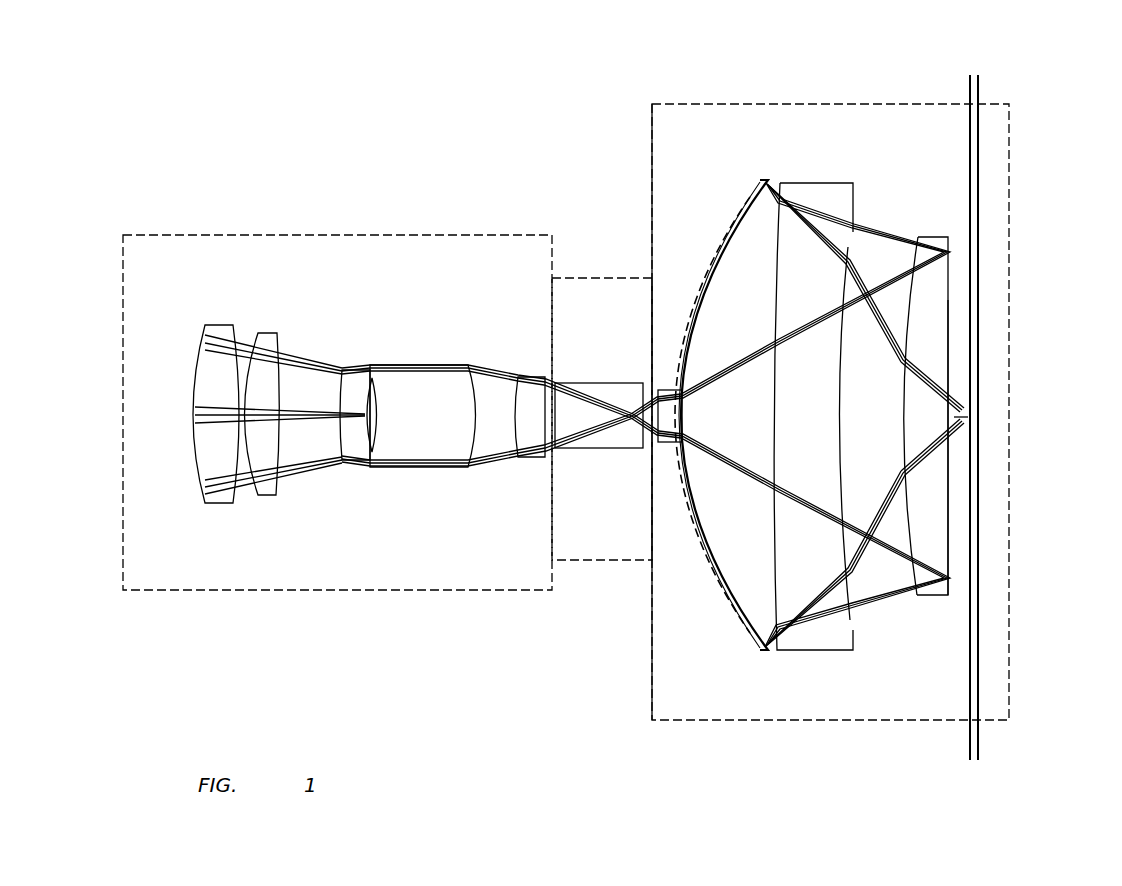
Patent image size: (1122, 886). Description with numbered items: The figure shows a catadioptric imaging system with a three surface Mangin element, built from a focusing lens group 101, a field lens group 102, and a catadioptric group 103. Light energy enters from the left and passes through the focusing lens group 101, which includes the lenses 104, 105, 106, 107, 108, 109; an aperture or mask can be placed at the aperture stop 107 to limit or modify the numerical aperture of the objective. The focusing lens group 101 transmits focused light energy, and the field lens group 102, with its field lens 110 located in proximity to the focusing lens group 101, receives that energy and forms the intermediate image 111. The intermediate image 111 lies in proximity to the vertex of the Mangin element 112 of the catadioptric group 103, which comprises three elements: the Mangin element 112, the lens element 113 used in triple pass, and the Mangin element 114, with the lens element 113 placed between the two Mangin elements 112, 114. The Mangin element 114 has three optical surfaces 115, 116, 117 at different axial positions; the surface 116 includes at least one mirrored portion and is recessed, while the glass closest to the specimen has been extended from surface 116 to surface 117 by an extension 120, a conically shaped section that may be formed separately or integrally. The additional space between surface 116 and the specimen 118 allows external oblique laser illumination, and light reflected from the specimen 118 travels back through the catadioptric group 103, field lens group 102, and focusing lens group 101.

The focusing lens group 101 is at (300, 235).
The field lens group 102 is at (583, 278).
The catadioptric group 103 is at (795, 104).
The lens 104 is at (212, 325).
The lens 105 is at (265, 333).
The lens 106 is at (352, 370).
The aperture stop 107 is at (368, 462).
The lens 108 is at (403, 365).
The lens 109 is at (528, 377).
The field lens 110 is at (584, 377).
The intermediate image 111 is at (632, 422).
The Mangin element 112 is at (755, 190).
The lens element 113 is at (800, 183).
The Mangin element 114 is at (928, 237).
The optical surface 115 is at (915, 595).
The optical surface 116 is at (948, 502).
The optical surface 117 is at (966, 433).
The specimen 118 is at (977, 280).
The extension 120 is at (965, 414).